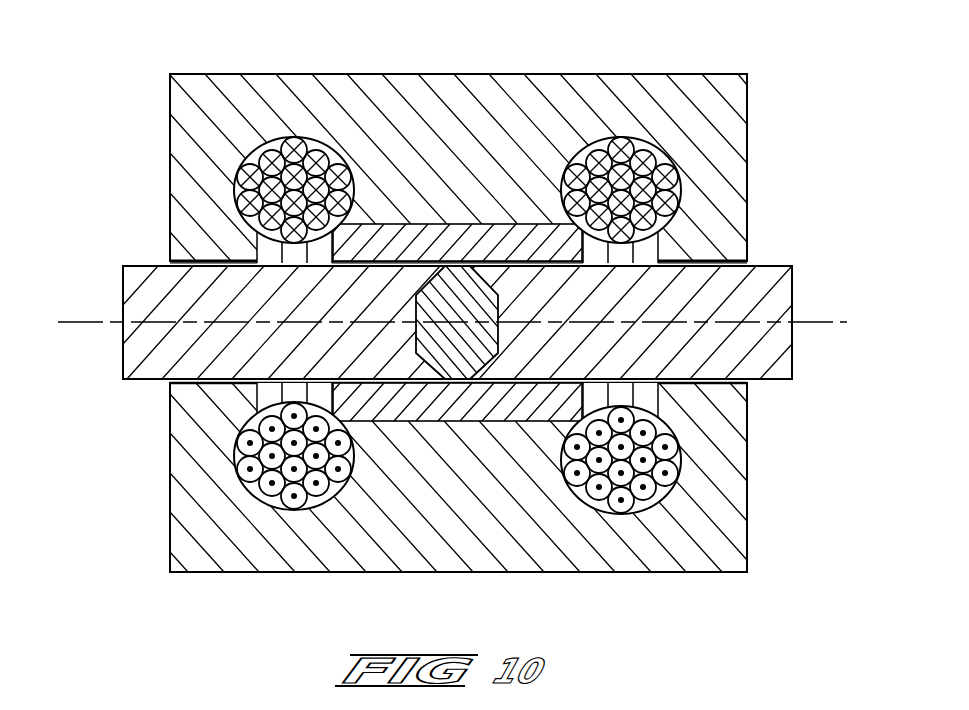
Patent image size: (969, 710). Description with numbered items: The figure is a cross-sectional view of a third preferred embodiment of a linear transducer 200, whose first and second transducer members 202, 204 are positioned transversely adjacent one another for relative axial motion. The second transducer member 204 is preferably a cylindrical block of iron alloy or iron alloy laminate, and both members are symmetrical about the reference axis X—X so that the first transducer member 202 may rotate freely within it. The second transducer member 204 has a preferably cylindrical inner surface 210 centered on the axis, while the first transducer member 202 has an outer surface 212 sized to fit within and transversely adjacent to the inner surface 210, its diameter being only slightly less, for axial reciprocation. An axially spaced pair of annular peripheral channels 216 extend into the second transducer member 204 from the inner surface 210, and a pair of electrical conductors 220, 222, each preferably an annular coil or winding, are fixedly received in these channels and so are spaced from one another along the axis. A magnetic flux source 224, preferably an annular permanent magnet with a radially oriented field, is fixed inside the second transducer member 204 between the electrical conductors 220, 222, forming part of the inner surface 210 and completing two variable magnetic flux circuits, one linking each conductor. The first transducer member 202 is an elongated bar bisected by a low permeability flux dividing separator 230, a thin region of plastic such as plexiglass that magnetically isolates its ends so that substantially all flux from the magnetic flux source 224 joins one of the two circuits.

The linear transducer 200 is at (446, 319).
The first transducer member 202 is at (147, 280).
The second transducer member 204 is at (198, 115).
The inner surface 210 is at (228, 255).
The outer surface 212 is at (147, 380).
The annular peripheral channels 216 is at (313, 138).
The electrical conductor 220 is at (240, 172).
The electrical conductor 222 is at (680, 202).
The magnetic flux source 224 is at (458, 244).
The low permeability flux dividing separator 230 is at (473, 302).